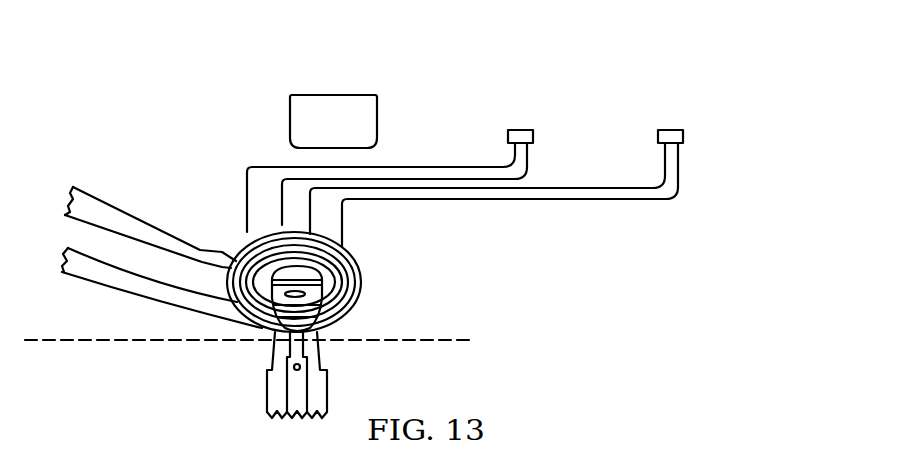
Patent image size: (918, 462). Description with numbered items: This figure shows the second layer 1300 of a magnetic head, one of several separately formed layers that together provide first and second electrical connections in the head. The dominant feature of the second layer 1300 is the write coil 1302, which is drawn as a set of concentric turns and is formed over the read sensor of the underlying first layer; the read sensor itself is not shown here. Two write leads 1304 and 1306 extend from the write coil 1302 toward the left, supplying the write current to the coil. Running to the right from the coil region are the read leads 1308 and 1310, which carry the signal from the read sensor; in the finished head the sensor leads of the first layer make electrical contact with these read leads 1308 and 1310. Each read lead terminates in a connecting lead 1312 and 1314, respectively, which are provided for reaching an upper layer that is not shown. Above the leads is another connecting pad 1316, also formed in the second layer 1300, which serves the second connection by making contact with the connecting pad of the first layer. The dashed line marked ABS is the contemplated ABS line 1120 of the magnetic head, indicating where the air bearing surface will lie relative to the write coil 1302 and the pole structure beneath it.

The second layer 1300 is at (614, 75).
The write coil 1302 is at (358, 265).
The write lead 1304 is at (98, 212).
The write lead 1306 is at (95, 270).
The read lead 1308 is at (393, 173).
The read lead 1310 is at (410, 198).
The connecting lead 1312 is at (520, 132).
The connecting lead 1314 is at (670, 132).
The connecting pad 1316 is at (355, 110).
The ABS line 1120 is at (108, 340).